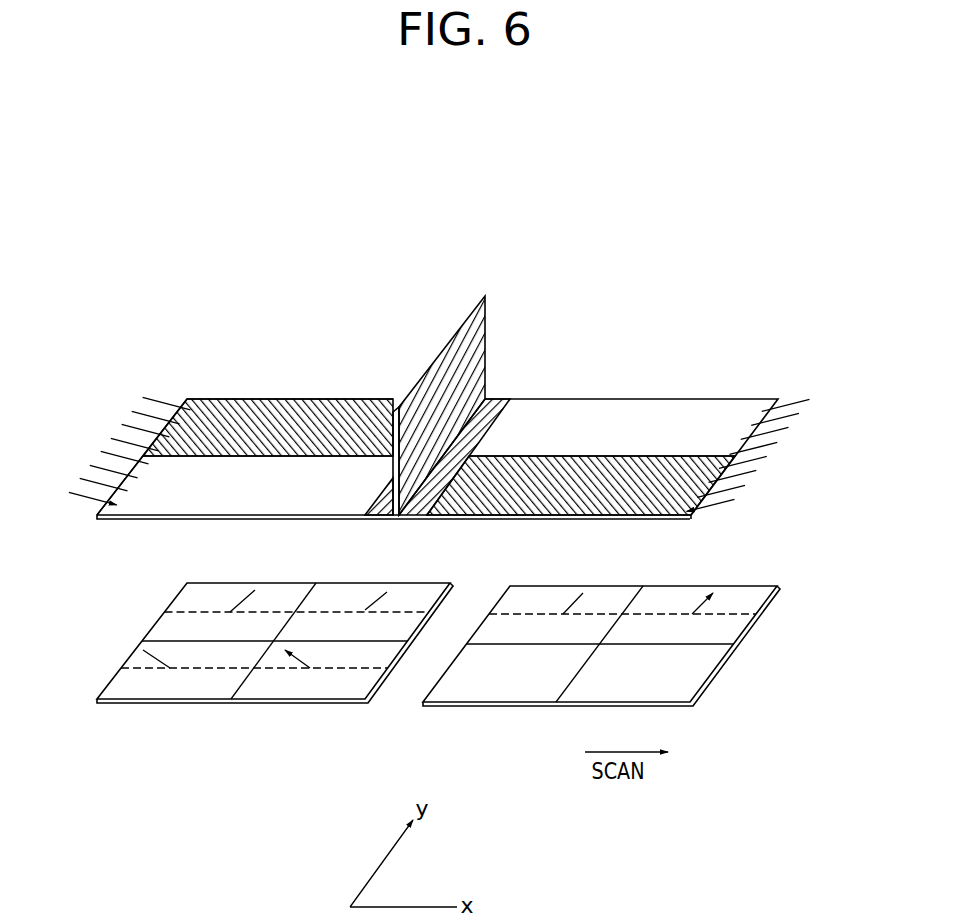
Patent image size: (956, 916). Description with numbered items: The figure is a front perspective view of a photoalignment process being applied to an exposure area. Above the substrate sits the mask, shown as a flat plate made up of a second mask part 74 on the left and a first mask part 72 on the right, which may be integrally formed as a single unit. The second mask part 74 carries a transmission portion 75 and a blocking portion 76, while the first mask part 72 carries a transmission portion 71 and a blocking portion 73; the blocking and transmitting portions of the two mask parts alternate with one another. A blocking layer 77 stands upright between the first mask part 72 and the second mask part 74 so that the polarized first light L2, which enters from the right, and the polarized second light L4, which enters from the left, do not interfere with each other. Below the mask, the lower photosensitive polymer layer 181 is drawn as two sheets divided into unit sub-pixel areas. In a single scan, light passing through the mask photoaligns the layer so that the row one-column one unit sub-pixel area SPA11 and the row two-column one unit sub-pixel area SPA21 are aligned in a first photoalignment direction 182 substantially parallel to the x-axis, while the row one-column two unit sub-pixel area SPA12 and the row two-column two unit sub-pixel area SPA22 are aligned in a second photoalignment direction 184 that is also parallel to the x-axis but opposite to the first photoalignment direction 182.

The blocking layer 77 is at (482, 293).
The second mask part 74 is at (328, 322).
The transmission portion 75 is at (252, 472).
The blocking portion 76 is at (315, 408).
The first mask part 72 is at (687, 325).
The transmission portion 71 is at (613, 427).
The blocking portion 73 is at (675, 468).
The second light L4 is at (168, 398).
The first light L2 is at (795, 402).
The lower photosensitive polymer layer 181 is at (778, 587).
The first photoalignment direction 182 is at (233, 602).
The second photoalignment direction 184 is at (158, 663).
The row 1-column 1 unit sub-pixel area SPA11 is at (352, 597).
The row 2-column 1 unit sub-pixel area SPA21 is at (175, 603).
The row 1-column 2 unit sub-pixel area SPA12 is at (315, 692).
The row 2-column 2 unit sub-pixel area SPA22 is at (162, 692).